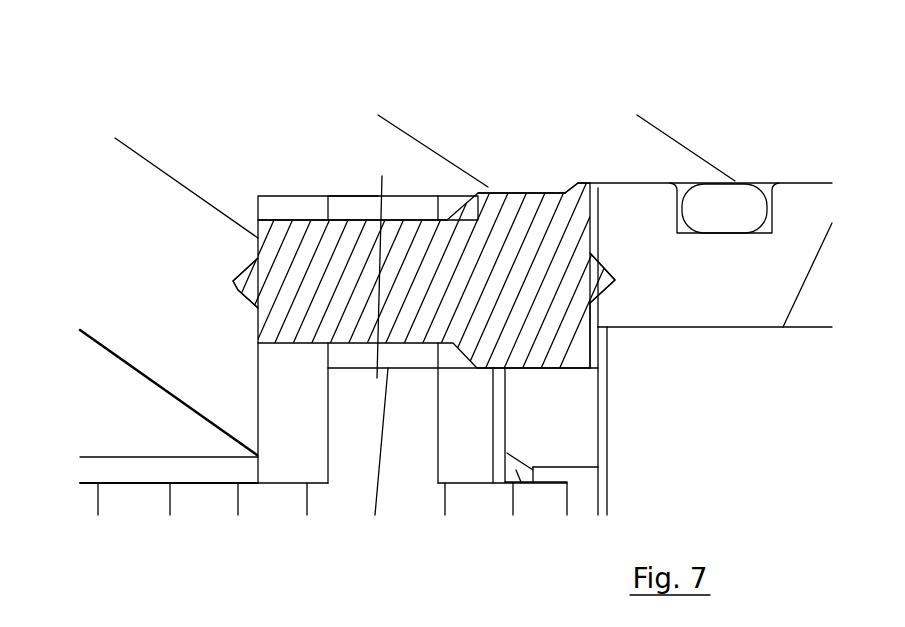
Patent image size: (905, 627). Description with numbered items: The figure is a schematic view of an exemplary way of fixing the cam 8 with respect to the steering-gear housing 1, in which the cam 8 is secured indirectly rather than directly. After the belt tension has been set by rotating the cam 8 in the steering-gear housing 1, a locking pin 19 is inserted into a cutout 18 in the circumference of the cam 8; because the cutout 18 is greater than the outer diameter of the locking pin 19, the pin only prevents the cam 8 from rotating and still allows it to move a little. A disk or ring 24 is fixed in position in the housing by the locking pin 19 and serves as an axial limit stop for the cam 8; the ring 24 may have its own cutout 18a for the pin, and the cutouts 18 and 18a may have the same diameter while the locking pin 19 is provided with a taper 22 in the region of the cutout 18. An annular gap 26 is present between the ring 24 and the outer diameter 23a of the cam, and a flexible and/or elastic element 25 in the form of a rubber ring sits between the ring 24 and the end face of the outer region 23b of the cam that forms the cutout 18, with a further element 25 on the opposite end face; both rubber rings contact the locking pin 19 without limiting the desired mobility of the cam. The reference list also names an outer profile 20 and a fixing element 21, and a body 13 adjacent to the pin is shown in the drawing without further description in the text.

The steering-gear housing 1 is at (153, 306).
The cam 8 is at (417, 505).
The cover 13 is at (690, 299).
The cutout 18 is at (330, 205).
The cutout 18a is at (540, 215).
The locking pin 19 is at (560, 323).
The outer profile 20 is at (511, 197).
The fixing element 21 is at (238, 277).
The taper 22 is at (422, 212).
The outer diameter of the cam 23a is at (258, 457).
The outer region of the cam 23b is at (387, 329).
The ring 24 is at (580, 405).
The flexible and/or elastic element 25 is at (258, 355).
The annular gap 26 is at (365, 207).